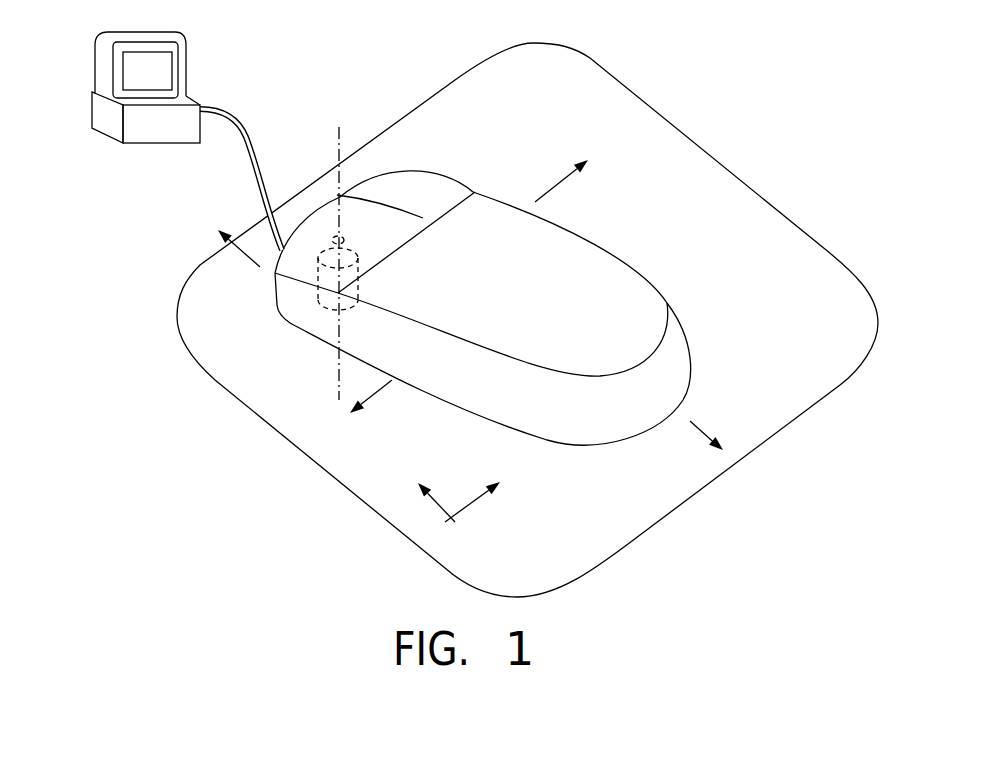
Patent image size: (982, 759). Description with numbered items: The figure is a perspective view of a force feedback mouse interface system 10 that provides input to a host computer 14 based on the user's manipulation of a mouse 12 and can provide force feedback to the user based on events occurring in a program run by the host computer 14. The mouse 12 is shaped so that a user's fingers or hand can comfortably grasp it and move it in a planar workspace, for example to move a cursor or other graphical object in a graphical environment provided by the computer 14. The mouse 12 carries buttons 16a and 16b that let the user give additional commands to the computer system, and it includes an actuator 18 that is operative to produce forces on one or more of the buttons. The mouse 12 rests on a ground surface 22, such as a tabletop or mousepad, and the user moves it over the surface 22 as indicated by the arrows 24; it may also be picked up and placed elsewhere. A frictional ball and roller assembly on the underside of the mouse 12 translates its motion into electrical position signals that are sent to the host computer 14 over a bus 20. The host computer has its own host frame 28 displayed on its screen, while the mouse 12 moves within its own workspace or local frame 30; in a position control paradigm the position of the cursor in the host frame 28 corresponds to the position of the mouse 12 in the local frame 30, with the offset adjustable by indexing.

The force feedback mouse interface system 10 is at (693, 47).
The mouse 12 is at (624, 220).
The host computer 14 is at (126, 137).
The button 16a is at (322, 222).
The button 16b is at (403, 185).
The actuator 18 is at (366, 296).
The bus 20 is at (240, 125).
The ground surface 22 is at (560, 540).
The arrows 24 is at (242, 250).
The host frame 28 is at (100, 88).
The local frame 30 is at (470, 505).